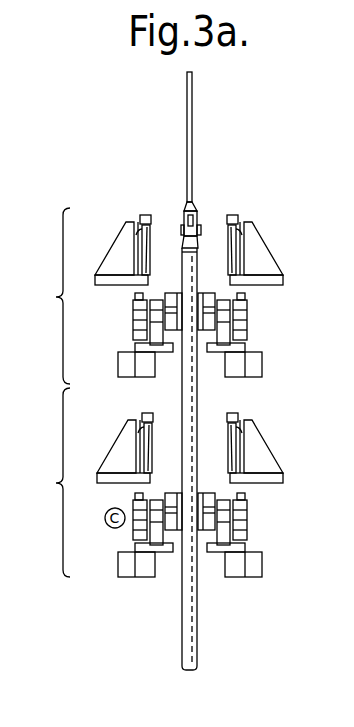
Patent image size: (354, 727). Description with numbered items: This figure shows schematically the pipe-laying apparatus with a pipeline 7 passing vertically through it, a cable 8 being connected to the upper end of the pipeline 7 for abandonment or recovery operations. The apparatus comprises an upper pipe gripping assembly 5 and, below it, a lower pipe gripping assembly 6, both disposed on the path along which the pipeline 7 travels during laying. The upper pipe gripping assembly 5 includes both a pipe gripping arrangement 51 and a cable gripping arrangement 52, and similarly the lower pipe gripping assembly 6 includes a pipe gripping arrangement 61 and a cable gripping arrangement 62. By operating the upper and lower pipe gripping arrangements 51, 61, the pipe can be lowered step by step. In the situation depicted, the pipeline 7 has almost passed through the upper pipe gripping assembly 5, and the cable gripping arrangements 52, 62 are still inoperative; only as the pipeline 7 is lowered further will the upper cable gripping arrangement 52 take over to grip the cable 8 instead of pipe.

The cable 8 is at (188, 152).
The pipeline 7 is at (183, 625).
The upper pipe gripping assembly 5 is at (53, 296).
The lower pipe gripping assembly 6 is at (53, 482).
The cable gripping arrangement 52 is at (277, 241).
The pipe gripping arrangement 51 is at (258, 327).
The cable gripping arrangement 62 is at (280, 456).
The pipe gripping arrangement 61 is at (259, 519).